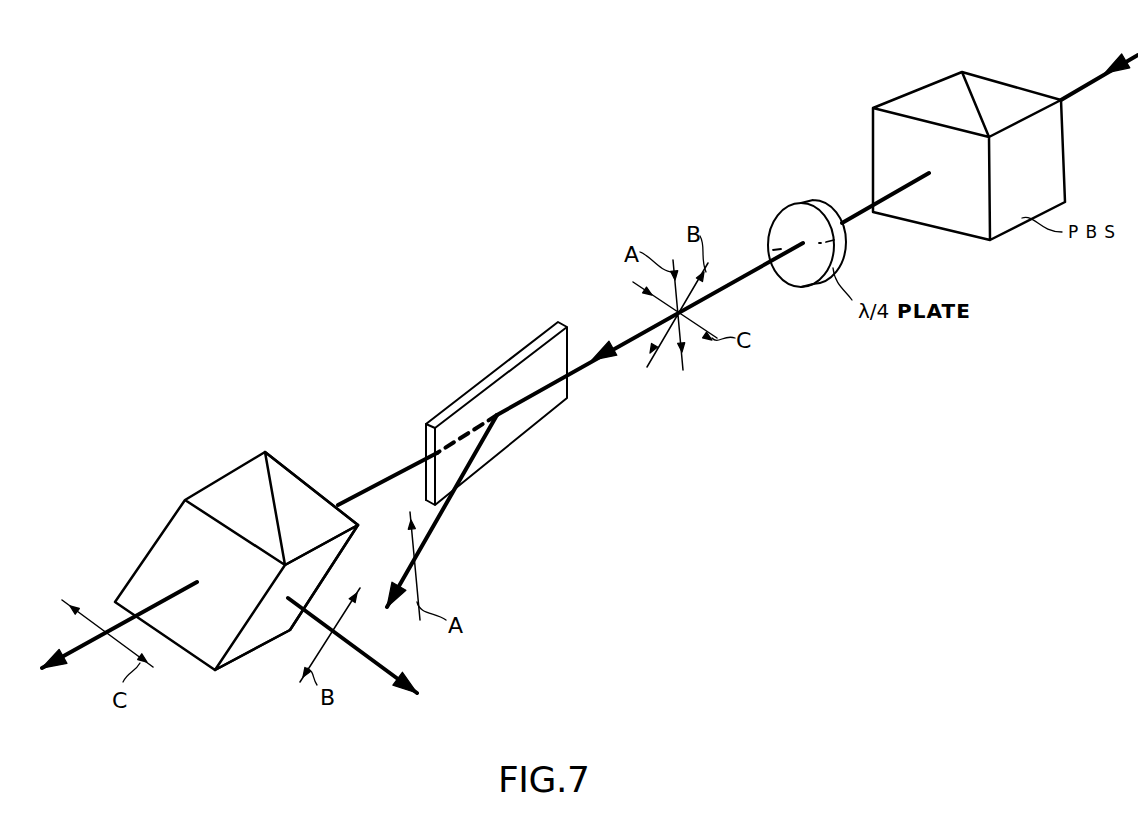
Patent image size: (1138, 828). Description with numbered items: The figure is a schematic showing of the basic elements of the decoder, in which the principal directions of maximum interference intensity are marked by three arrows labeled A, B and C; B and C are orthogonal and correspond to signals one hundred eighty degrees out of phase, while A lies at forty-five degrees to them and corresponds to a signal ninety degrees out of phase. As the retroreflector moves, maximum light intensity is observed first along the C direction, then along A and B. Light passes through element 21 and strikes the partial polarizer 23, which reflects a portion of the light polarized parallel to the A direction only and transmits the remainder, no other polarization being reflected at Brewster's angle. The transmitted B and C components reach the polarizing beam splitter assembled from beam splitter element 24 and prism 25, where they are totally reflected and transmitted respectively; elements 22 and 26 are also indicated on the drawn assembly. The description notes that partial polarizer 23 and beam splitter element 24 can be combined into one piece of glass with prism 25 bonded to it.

The birefringent plate 21 is at (520, 375).
The polarizing beam splitter prism 22 is at (313, 537).
The partial polarizer 23 is at (255, 472).
The PBS element 24 is at (602, 368).
The prism 25 is at (455, 405).
The prism surface 26 is at (310, 480).